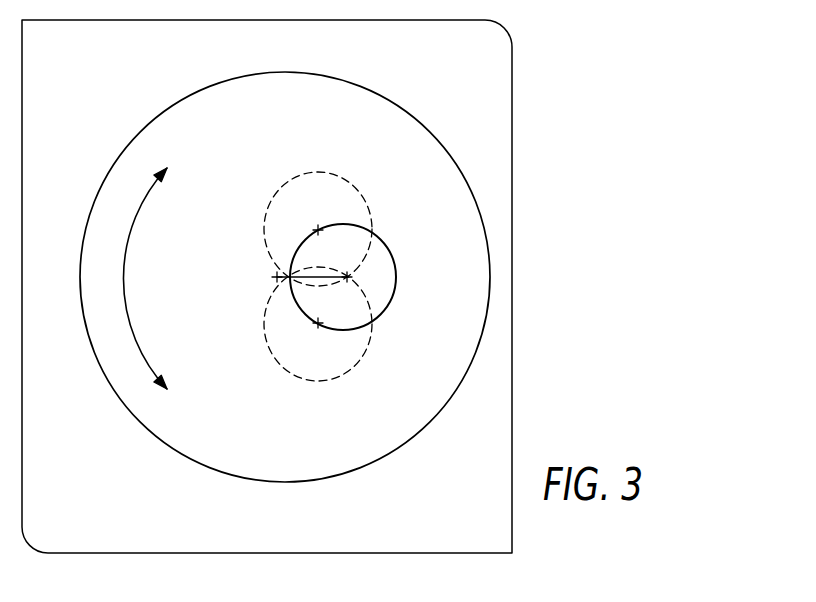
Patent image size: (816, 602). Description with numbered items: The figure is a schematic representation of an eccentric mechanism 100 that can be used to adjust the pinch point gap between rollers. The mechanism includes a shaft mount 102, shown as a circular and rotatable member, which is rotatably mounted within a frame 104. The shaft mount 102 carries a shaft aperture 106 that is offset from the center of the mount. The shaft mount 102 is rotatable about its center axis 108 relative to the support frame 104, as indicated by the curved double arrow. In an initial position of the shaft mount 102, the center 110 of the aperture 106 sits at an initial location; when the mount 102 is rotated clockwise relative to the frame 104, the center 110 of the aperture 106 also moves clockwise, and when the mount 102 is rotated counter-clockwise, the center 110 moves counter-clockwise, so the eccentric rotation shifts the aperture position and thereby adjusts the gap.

The eccentric mechanism 100 is at (586, 53).
The shaft mount 102 is at (302, 120).
The frame 104 is at (443, 69).
The shaft aperture 106 is at (388, 250).
The center axis 108 is at (268, 277).
The center of the aperture 110 is at (320, 228).